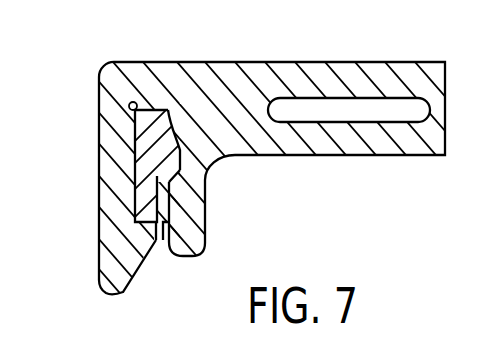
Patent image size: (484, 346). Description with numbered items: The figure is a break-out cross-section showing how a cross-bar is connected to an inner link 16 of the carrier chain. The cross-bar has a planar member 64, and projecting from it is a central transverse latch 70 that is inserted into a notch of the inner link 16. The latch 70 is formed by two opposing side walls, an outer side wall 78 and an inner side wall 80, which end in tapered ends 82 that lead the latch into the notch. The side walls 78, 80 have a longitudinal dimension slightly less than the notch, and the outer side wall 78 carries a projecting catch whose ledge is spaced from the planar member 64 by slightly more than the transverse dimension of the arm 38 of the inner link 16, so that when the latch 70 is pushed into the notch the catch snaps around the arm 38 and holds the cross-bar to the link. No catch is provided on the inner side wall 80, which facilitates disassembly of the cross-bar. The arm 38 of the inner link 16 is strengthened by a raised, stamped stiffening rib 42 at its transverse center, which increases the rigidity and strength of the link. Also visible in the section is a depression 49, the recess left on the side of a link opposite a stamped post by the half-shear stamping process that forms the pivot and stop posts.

The latch 70 is at (86, 121).
The planar member 64 is at (280, 61).
The arm 38 is at (169, 110).
The depression 49 is at (145, 162).
The stiffening rib 42 is at (176, 170).
The inner side wall 80 is at (205, 212).
The outer side wall 78 is at (100, 220).
The inner link 16 is at (161, 241).
The tapered end 82 is at (109, 295).